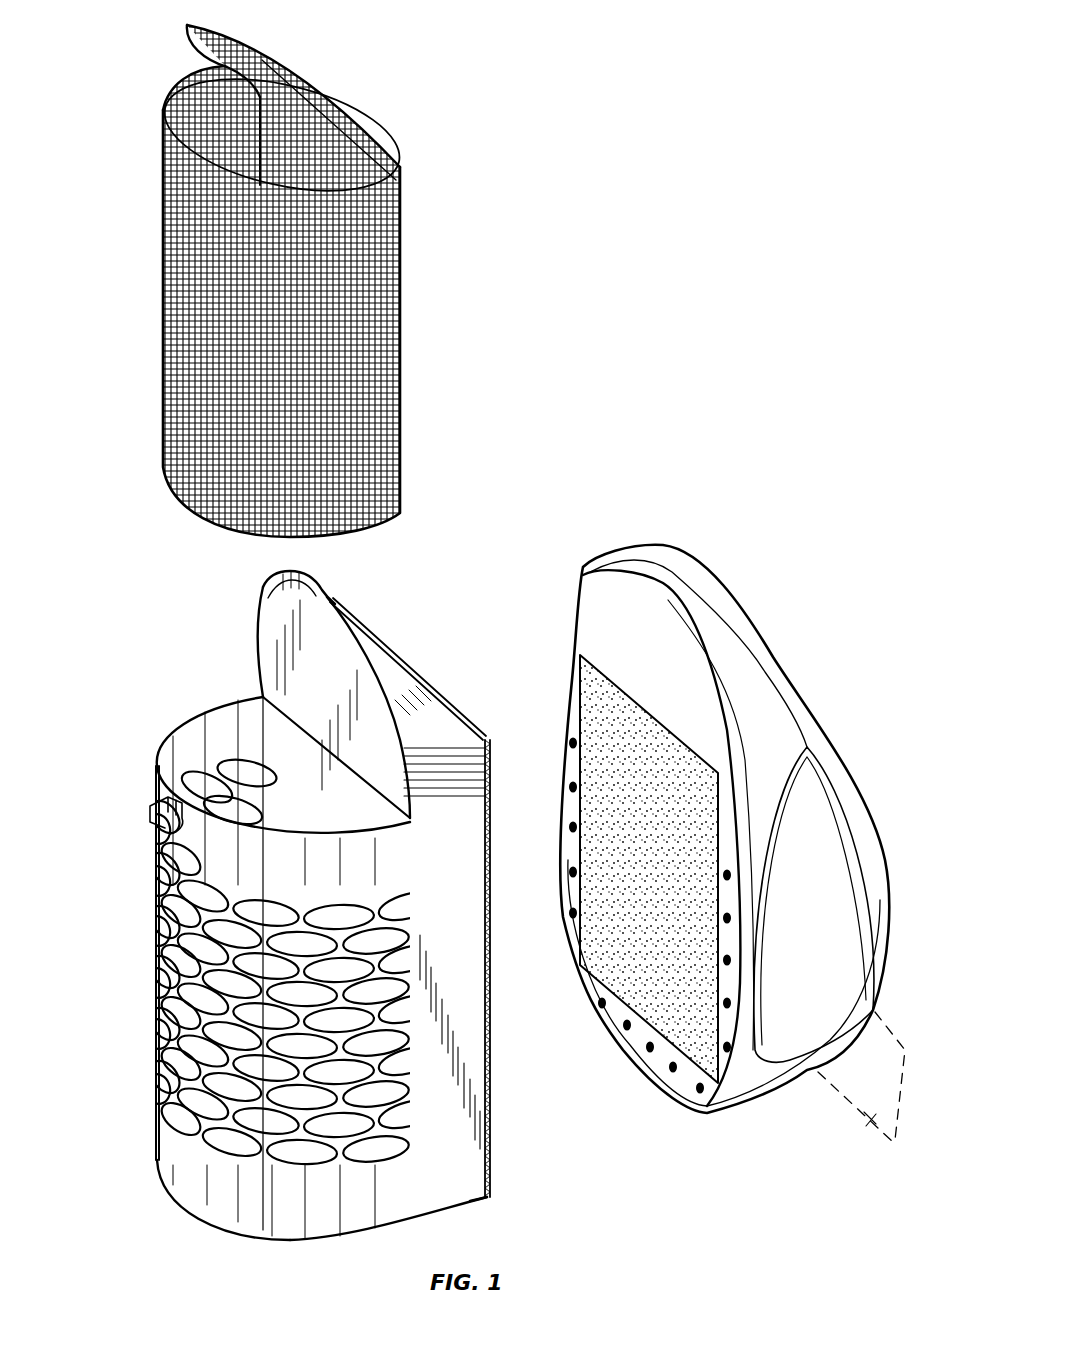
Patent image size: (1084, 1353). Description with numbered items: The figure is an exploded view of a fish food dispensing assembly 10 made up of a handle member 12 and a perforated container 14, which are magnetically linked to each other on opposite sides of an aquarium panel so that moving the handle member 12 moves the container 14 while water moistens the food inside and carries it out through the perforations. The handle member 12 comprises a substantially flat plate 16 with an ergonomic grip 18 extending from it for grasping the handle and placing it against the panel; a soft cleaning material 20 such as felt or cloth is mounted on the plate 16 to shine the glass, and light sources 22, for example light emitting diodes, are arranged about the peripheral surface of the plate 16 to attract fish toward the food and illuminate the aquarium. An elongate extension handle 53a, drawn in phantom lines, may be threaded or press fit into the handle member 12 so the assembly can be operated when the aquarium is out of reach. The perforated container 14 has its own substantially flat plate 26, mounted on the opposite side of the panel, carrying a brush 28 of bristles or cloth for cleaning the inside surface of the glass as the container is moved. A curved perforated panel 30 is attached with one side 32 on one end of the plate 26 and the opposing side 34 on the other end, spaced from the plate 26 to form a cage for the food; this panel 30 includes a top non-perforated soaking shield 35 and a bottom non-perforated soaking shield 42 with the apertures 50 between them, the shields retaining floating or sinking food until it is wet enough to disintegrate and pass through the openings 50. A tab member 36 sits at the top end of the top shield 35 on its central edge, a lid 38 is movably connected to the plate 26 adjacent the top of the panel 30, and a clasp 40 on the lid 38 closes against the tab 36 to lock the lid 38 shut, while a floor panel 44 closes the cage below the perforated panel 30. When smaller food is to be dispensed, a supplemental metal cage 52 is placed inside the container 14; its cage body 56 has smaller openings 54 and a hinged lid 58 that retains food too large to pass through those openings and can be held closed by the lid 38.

The fish food dispensing assembly 10 is at (684, 361).
The handle member 12 is at (778, 565).
The perforated container 14 is at (112, 680).
The flat plate 16 is at (745, 1070).
The ergonomic grip 18 is at (847, 882).
The soft cleaning material 20 is at (580, 690).
The light sources 22 is at (571, 780).
The flat plate 26 is at (478, 1145).
The brush 28 is at (490, 1095).
The curved perforated panel 30 is at (212, 1200).
The one side of perforated panel 32 is at (440, 848).
The opposing side of perforated panel 34 is at (245, 720).
The top non-perforated soaking shield 35 is at (215, 857).
The tab member 36 is at (152, 800).
The lid 38 is at (352, 668).
The clasp 40 is at (312, 580).
The bottom non-perforated soaking shield 42 is at (200, 1158).
The floor panel 44 is at (305, 1245).
The apertures 50 is at (393, 903).
The supplemental cage 52 is at (386, 120).
The elongate extension handle 53a is at (870, 1120).
The smaller openings 54 is at (200, 312).
The cage body 56 is at (393, 328).
The hinged lid 58 is at (243, 45).